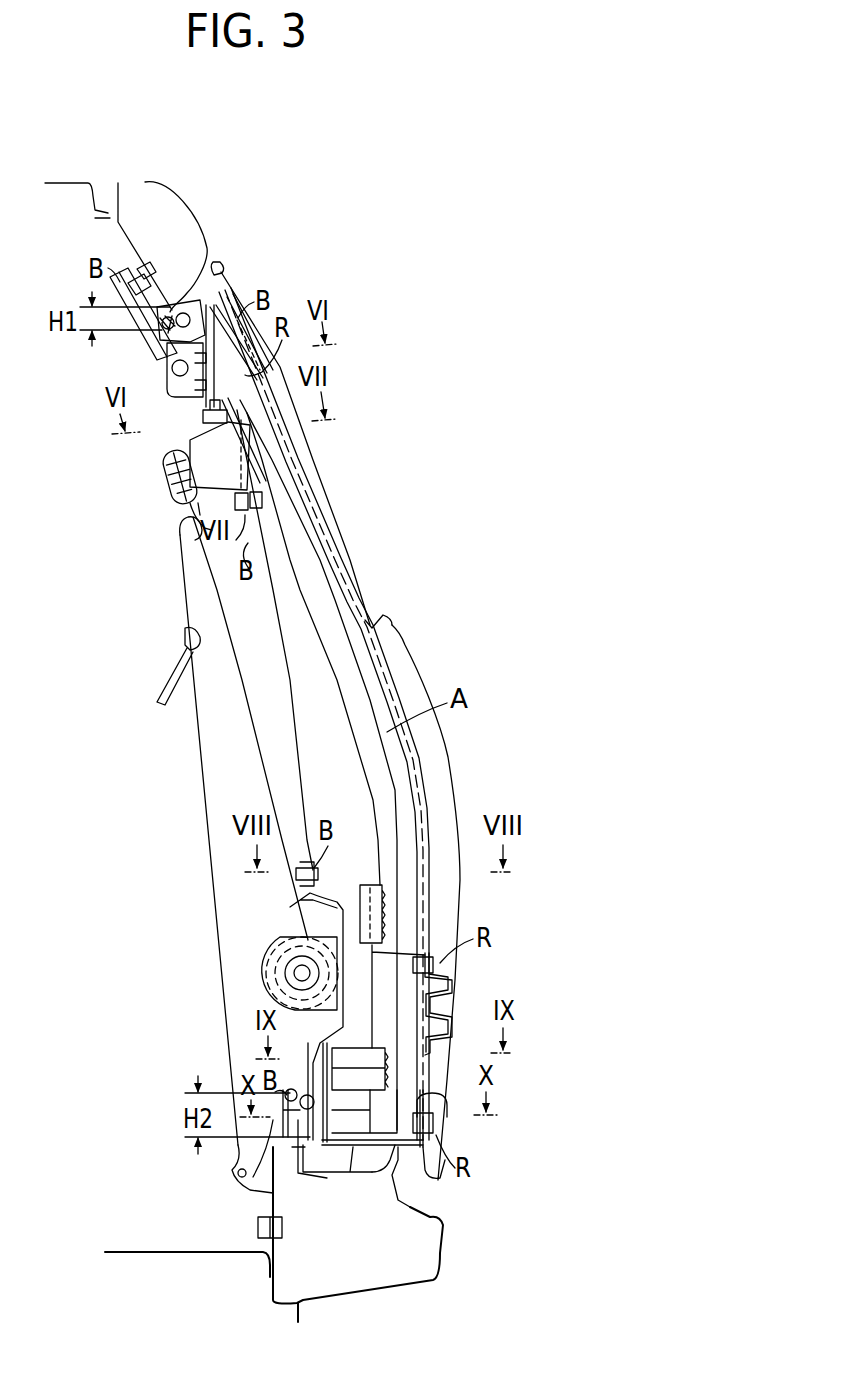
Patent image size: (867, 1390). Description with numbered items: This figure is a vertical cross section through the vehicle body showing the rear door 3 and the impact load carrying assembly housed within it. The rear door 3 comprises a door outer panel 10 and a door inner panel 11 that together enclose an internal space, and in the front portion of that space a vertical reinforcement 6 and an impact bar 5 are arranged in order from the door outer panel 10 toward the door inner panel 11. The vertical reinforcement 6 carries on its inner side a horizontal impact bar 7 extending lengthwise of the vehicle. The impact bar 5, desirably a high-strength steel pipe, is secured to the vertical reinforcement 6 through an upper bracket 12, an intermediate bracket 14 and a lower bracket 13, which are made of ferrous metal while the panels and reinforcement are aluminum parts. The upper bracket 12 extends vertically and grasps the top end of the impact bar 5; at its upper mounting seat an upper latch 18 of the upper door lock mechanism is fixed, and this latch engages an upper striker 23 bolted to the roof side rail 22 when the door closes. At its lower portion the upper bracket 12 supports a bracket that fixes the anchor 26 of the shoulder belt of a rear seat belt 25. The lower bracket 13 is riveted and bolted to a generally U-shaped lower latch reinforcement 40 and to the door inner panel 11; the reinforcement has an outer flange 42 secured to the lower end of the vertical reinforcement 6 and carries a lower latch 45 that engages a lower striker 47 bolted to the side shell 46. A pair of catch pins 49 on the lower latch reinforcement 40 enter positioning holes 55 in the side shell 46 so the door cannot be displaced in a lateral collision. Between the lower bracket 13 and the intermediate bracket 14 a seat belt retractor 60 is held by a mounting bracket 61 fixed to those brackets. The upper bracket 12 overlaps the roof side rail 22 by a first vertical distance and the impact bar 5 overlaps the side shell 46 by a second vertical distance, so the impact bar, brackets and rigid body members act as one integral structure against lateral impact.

The rear door 3 is at (347, 507).
The impact bar 5 is at (363, 683).
The vertical reinforcement 6 is at (425, 797).
The horizontal impact bar 7 is at (453, 988).
The door outer panel 10 is at (368, 620).
The door inner panel 11 is at (292, 688).
The upper bracket 12 is at (190, 422).
The lower bracket 13 is at (372, 1083).
The intermediate bracket 14 is at (360, 885).
The upper latch 18 is at (168, 390).
The roof side rail 22 is at (193, 210).
The upper striker 23 is at (150, 347).
The rear seat belt 25 is at (205, 833).
The anchor 26 is at (182, 500).
The lower latch reinforcement 40 is at (410, 1173).
The outer flange 42 is at (434, 1120).
The lower latch 45 is at (362, 1127).
The side shell 46 is at (423, 1262).
The lower striker 47 is at (327, 1160).
The catch pins 49 is at (298, 1175).
The positioning holes 55 is at (256, 1186).
The seat belt retractor 60 is at (262, 975).
The mounting bracket 61 is at (308, 914).